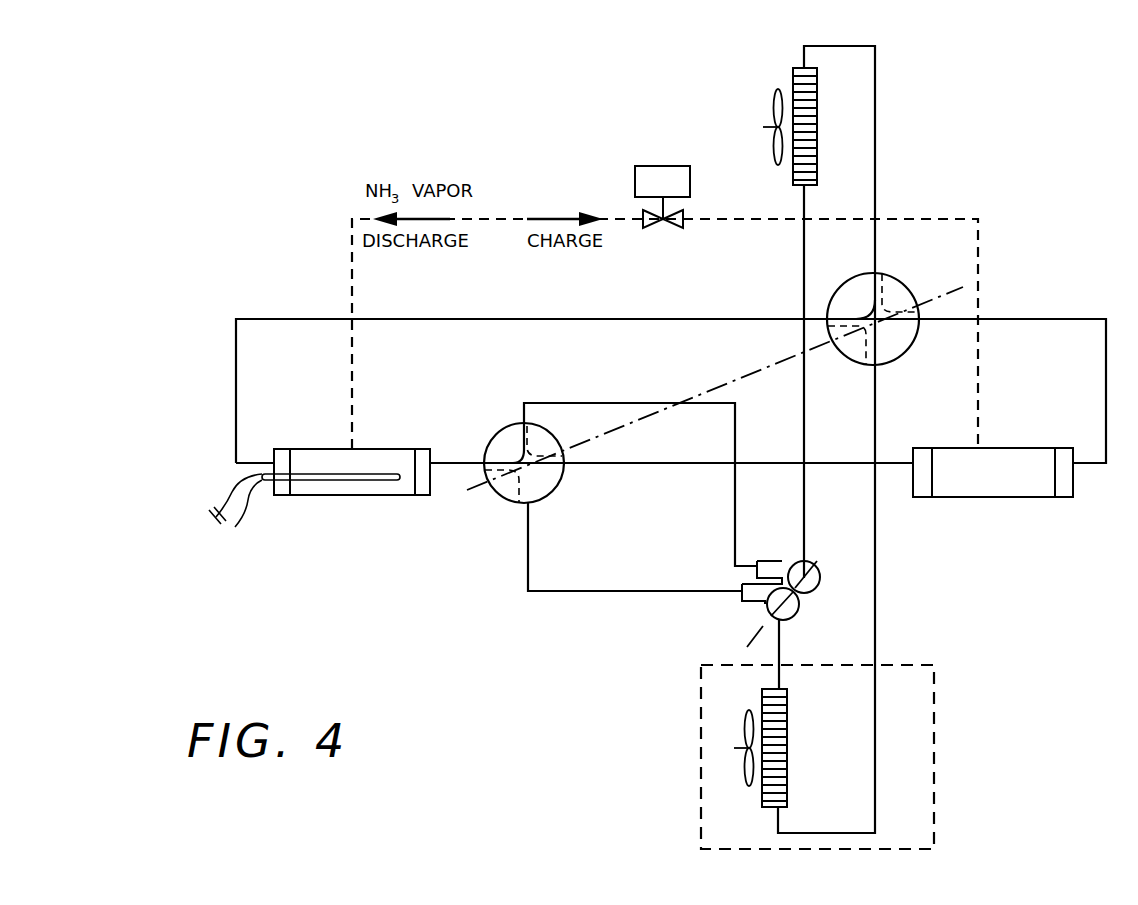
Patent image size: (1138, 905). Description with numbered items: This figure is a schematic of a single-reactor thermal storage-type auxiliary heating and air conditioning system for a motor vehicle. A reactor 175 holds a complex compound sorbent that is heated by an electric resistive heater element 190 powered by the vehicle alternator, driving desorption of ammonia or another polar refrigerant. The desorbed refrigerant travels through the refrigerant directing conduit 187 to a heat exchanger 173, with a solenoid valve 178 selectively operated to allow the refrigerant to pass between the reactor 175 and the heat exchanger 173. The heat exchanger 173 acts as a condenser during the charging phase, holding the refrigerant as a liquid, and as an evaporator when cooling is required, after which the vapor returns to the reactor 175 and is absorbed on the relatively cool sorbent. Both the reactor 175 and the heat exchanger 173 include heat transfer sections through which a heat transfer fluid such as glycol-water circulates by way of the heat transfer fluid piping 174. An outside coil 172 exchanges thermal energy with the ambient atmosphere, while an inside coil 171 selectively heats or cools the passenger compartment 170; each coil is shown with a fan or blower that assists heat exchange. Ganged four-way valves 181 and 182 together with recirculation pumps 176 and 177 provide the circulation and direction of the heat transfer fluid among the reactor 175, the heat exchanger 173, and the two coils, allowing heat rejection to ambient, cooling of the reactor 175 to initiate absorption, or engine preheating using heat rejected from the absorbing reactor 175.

The passenger compartment 170 is at (905, 665).
The inside coil 171 is at (788, 750).
The outside coil 172 is at (802, 66).
The heat exchanger 173 is at (998, 497).
The heat transfer fluid piping 174 is at (236, 385).
The reactor 175 is at (350, 496).
The recirculation pump 176 is at (800, 563).
The recirculation pump 177 is at (760, 600).
The solenoid valve 178 is at (665, 166).
The 4-way valve 181 is at (505, 425).
The 4-way valve 182 is at (893, 275).
The refrigerant directing conduit 187 is at (352, 282).
The electric resistive heater element 190 is at (307, 480).